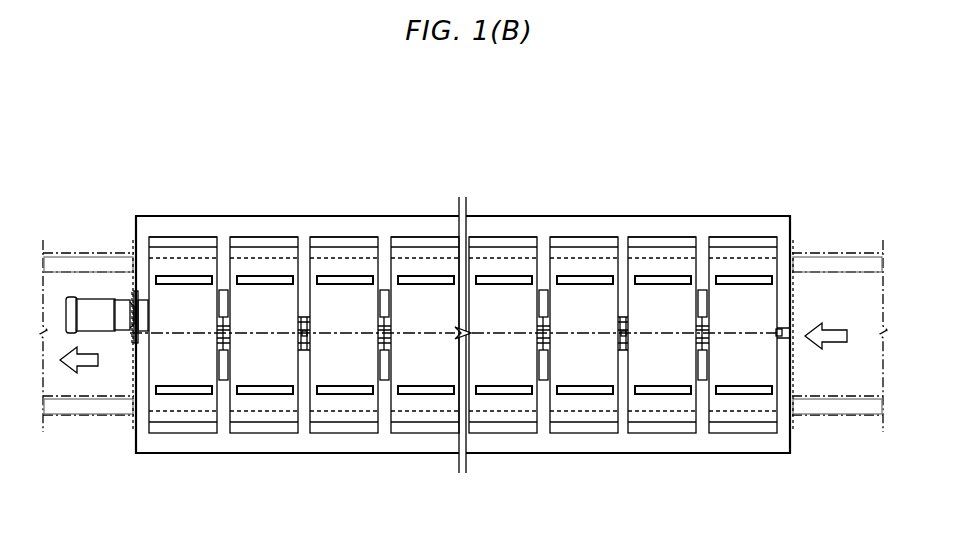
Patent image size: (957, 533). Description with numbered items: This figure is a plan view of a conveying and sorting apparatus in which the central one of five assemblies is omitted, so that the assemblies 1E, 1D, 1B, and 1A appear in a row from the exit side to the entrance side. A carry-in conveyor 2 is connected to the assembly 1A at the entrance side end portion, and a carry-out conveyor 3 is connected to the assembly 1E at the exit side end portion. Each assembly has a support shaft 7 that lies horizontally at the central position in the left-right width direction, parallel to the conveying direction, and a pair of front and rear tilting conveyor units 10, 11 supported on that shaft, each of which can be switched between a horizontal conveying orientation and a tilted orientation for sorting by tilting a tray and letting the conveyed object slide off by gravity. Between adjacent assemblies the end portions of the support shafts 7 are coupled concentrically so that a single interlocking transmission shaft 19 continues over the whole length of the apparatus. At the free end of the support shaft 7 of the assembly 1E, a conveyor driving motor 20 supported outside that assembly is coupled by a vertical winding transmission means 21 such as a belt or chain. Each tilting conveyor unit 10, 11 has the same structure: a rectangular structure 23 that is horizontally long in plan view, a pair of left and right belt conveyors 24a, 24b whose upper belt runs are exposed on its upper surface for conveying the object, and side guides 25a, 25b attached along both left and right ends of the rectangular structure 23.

The assembly 1A is at (780, 131).
The assembly 1B is at (619, 131).
The assembly 1D is at (305, 131).
The assembly 1E is at (145, 131).
The carry-in conveyor 2 is at (860, 275).
The carry-out conveyor 3 is at (77, 255).
The support shaft 7 is at (222, 333).
The tilting conveyor unit 10 is at (272, 235).
The tilting conveyor unit 11 is at (179, 235).
The interlocking transmission shaft 19 is at (382, 342).
The conveyor driving motor 20 is at (106, 322).
The winding transmission means 21 is at (146, 296).
The rectangular structure 23 is at (169, 366).
The belt conveyor 24a is at (246, 397).
The belt conveyor 24b is at (168, 275).
The side guide 25a is at (273, 432).
The side guide 25b is at (254, 241).